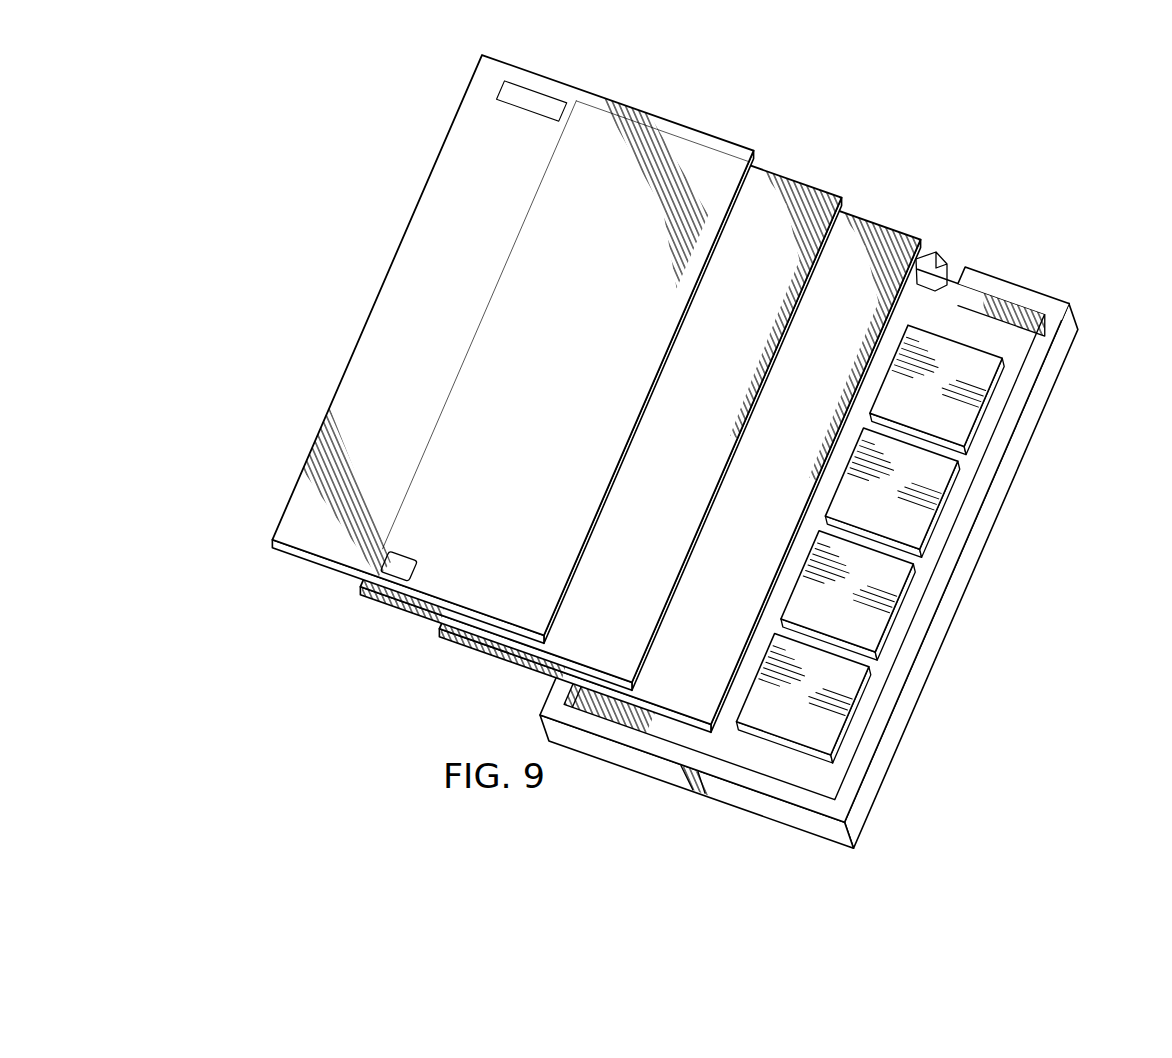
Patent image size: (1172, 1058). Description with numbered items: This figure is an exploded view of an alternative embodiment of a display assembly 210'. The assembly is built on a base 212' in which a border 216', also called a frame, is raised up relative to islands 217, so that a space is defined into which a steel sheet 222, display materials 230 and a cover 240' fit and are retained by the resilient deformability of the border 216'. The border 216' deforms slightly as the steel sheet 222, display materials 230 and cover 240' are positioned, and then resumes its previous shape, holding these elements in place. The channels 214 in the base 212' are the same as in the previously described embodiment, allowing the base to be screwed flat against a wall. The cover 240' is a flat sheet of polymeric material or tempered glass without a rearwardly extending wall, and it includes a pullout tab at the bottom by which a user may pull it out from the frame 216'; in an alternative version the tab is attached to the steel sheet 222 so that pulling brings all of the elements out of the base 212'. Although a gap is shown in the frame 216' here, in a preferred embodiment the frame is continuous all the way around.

The display assembly 210' is at (662, 441).
The base 212' is at (824, 522).
The channels 214 is at (960, 453).
The border 216' is at (1013, 280).
The islands 217 is at (960, 397).
The steel sheet 222 is at (885, 229).
The display materials 230 is at (800, 181).
The cover 240' is at (512, 339).